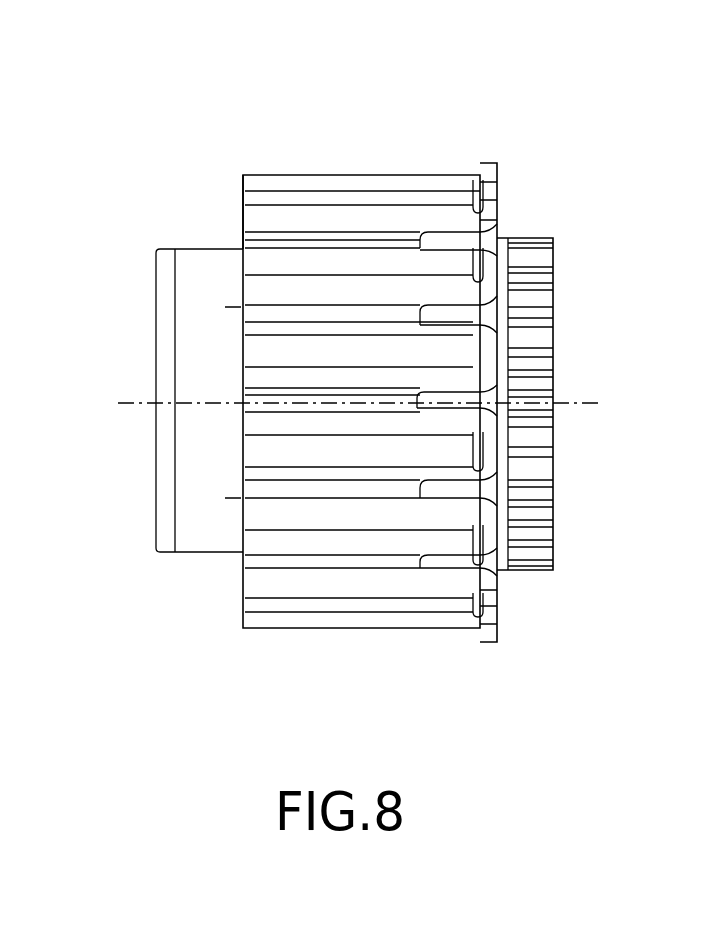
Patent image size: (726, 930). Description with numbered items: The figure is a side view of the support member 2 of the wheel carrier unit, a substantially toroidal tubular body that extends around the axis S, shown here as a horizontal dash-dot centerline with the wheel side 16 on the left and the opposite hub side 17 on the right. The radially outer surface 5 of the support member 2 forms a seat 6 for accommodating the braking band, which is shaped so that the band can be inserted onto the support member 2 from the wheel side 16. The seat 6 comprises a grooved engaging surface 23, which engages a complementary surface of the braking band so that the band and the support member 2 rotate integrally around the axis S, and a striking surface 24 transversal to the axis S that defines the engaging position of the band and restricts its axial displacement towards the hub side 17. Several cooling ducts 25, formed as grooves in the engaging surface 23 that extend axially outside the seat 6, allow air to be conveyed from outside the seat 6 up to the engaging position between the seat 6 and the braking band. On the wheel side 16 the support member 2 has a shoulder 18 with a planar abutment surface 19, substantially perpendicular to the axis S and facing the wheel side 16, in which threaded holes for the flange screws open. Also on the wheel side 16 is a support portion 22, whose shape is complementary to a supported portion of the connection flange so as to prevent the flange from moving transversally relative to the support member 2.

The support member 2 is at (512, 110).
The radially outer surface 5 is at (312, 176).
The seat 6 is at (388, 177).
The wheel side 16 is at (72, 418).
The hub side 17 is at (646, 419).
The shoulder 18 is at (243, 212).
The abutment surface 19 is at (242, 233).
The support portion 22 is at (188, 512).
The engaging surface 23 is at (333, 577).
The striking surface 24 is at (481, 634).
The cooling ducts 25 is at (463, 236).